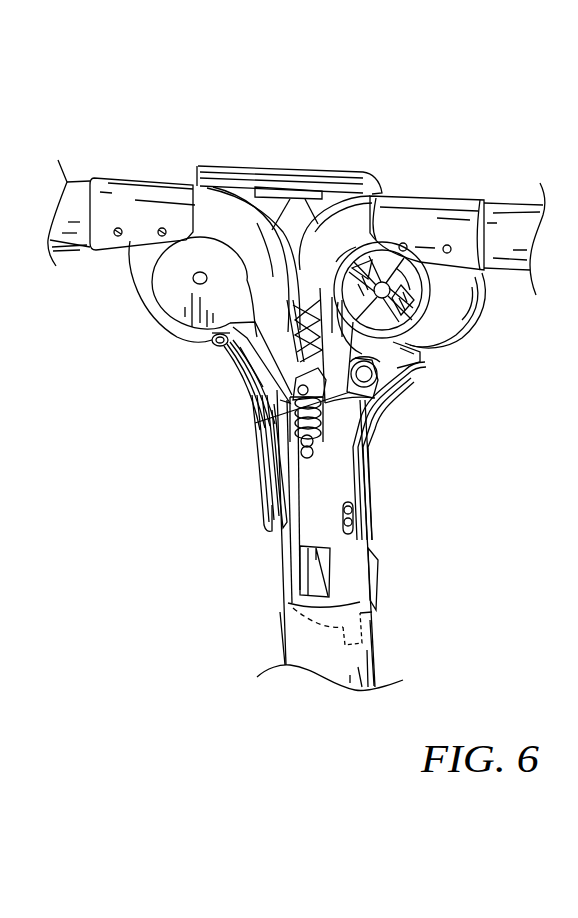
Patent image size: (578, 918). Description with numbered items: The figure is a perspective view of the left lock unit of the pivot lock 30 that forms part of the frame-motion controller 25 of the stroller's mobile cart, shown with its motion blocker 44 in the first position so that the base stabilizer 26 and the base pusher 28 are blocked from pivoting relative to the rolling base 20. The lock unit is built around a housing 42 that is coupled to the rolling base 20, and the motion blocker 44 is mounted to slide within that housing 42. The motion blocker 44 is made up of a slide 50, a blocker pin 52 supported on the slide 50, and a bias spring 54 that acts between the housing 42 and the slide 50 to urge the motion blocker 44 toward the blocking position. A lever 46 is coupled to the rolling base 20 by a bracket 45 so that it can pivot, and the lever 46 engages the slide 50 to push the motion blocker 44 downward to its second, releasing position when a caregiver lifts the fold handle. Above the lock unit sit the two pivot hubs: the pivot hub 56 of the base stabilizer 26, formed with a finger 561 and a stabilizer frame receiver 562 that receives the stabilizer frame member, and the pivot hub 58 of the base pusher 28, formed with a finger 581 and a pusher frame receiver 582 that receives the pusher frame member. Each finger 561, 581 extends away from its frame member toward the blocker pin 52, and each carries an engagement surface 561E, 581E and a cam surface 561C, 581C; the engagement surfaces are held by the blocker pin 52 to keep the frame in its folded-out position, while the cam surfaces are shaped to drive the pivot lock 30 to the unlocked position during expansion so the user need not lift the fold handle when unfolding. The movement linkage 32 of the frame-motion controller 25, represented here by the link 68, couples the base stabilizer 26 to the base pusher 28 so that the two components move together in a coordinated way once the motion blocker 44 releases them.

The rolling base 20 is at (387, 665).
The frame-motion controller 25 is at (387, 415).
The base stabilizer 26 is at (73, 177).
The base pusher 28 is at (516, 201).
The pivot lock 30 is at (253, 443).
The movement linkage 32 is at (245, 372).
The housing 42 is at (375, 535).
The motion blocker 44 is at (325, 505).
The bracket 45 is at (372, 563).
The lever 46 is at (373, 619).
The slide 50 is at (303, 499).
The blocker pin 52 is at (270, 460).
The bias spring 54 is at (318, 450).
The pivot hub 56 is at (168, 178).
The pivot hub 58 is at (426, 192).
The right link 68 is at (217, 350).
The finger 561 is at (253, 337).
The cam surface 561C is at (262, 397).
The engagement surface 561E is at (255, 423).
The stabilizer frame receiver 562 is at (127, 212).
The finger 581 is at (352, 315).
The cam surface 581C is at (397, 362).
The engagement surface 581E is at (415, 363).
The pusher frame receiver 582 is at (457, 227).